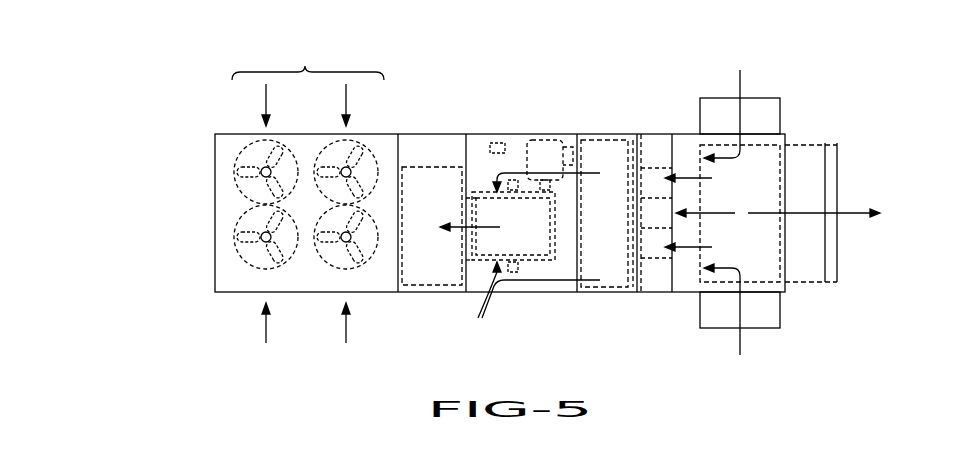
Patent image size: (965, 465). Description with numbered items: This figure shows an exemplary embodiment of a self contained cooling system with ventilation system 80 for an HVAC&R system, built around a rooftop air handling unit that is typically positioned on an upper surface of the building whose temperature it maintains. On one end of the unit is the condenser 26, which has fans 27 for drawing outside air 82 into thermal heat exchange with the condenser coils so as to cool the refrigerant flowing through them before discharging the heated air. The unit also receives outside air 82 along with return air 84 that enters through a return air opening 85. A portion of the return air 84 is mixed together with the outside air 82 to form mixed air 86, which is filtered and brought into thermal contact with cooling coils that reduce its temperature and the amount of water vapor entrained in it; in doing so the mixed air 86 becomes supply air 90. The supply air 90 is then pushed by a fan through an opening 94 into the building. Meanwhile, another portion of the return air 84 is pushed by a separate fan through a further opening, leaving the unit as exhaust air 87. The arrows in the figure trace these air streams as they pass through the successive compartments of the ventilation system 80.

The ventilation system 80 is at (170, 62).
The condenser 26 is at (305, 66).
The fans 27 is at (260, 187).
The outside air 82 is at (264, 90).
The opening 94 is at (440, 165).
The supply air 90 is at (510, 170).
The mixed air 86 is at (697, 178).
The return air opening 85 is at (780, 238).
The return air 84 is at (706, 213).
The exhaust air 87 is at (808, 212).